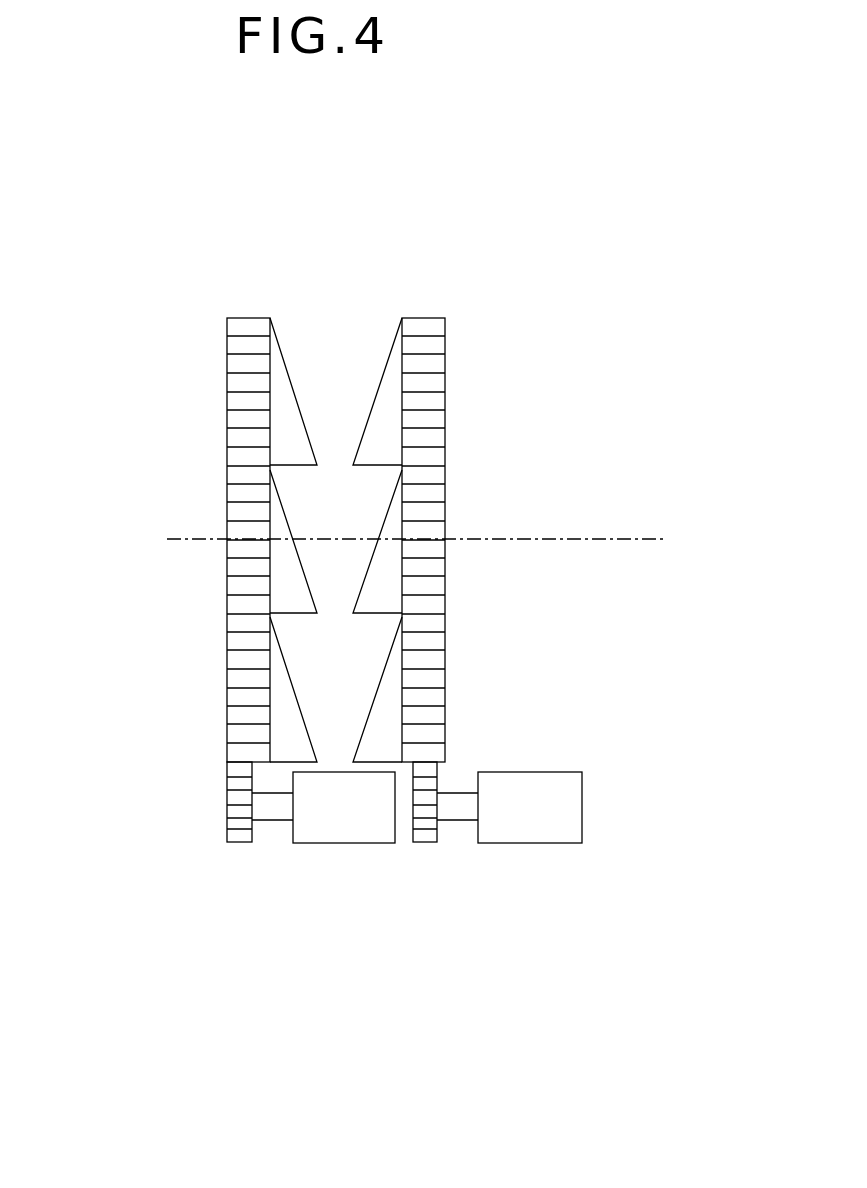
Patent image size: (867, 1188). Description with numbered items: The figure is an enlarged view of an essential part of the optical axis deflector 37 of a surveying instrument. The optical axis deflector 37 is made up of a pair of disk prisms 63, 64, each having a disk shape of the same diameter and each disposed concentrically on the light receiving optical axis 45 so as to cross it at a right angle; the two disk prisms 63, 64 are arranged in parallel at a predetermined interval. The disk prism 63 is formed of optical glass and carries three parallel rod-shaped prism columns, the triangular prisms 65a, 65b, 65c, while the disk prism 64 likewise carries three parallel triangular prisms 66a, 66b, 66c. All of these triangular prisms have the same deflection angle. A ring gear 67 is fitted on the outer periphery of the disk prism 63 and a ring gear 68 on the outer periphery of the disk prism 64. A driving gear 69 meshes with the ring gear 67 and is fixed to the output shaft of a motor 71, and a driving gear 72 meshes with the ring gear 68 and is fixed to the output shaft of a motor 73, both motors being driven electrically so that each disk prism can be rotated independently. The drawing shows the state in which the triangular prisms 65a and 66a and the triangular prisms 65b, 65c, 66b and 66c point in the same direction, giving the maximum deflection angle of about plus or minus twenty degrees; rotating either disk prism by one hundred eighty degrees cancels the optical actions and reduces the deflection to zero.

The optical axis deflector 37 is at (336, 103).
The light receiving optical axis 45 is at (540, 538).
The disk prism 63 is at (445, 732).
The disk prism 64 is at (227, 730).
The triangular prism 65a is at (368, 570).
The triangular prism 65b is at (382, 368).
The triangular prism 65c is at (370, 708).
The triangular prism 66a is at (291, 540).
The triangular prism 66b is at (288, 362).
The triangular prism 66c is at (294, 692).
The ring gear 67 is at (425, 318).
The ring gear 68 is at (245, 318).
The driving gear 69 is at (428, 845).
The motor 71 is at (545, 845).
The driving gear 72 is at (235, 845).
The motor 73 is at (315, 845).